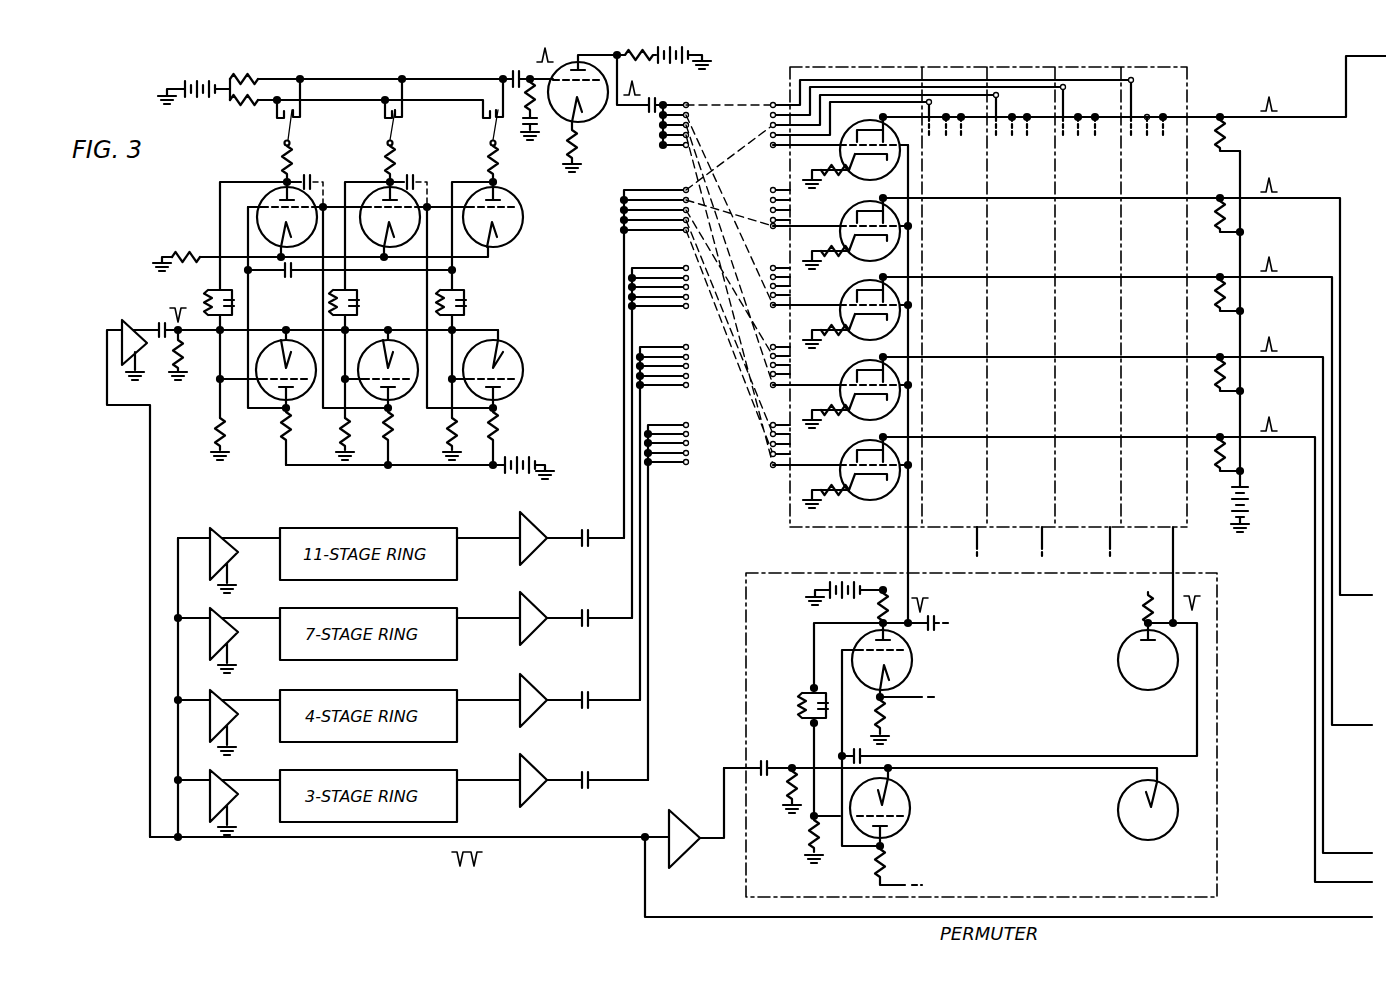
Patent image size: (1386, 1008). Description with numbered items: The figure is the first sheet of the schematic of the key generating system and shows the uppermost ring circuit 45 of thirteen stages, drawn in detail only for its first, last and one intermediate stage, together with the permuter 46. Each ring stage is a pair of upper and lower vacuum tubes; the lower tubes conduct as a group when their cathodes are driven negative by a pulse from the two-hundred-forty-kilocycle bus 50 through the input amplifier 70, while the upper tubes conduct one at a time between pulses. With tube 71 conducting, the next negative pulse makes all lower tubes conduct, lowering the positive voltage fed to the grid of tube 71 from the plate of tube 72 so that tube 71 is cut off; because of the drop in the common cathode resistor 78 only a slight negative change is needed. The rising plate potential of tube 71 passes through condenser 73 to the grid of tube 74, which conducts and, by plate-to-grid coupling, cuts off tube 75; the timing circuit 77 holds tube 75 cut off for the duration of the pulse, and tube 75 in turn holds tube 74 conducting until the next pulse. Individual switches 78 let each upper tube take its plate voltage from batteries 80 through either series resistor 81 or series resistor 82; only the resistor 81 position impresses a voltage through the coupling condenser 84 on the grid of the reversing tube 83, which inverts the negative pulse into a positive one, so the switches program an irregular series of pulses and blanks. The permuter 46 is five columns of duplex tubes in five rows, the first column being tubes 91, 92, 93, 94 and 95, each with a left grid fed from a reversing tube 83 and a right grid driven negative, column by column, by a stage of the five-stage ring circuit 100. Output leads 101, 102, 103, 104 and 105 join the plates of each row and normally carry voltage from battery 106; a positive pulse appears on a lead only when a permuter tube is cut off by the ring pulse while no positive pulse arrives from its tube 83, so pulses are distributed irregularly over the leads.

The ring circuit 45 is at (355, 442).
The permuter 46 is at (1079, 458).
The 240-kilocycle bus 50 is at (358, 839).
The input amplifier 70 is at (134, 323).
The tube 71 is at (266, 200).
The tube 72 is at (282, 338).
The condenser 73 is at (308, 180).
The tube 74 is at (377, 184).
The tube 75 is at (380, 340).
The timing circuit 77 is at (357, 300).
The common cathode resistor and switches 78 is at (295, 117).
The battery 80 is at (207, 80).
The series resistor 81 is at (249, 76).
The series resistor 82 is at (254, 106).
The reversing tube 83 is at (561, 62).
The coupling condenser 84 is at (514, 72).
The permuter tube 91 is at (844, 152).
The permuter tube 92 is at (842, 223).
The permuter tube 93 is at (844, 300).
The permuter tube 94 is at (844, 380).
The permuter tube 95 is at (842, 458).
The five-stage ring circuit 100 is at (1217, 746).
The output lead 101 is at (1308, 118).
The output lead 102 is at (1296, 199).
The output lead 103 is at (1296, 278).
The output lead 104 is at (1294, 358).
The output lead 105 is at (1291, 438).
The battery 106 is at (1248, 503).